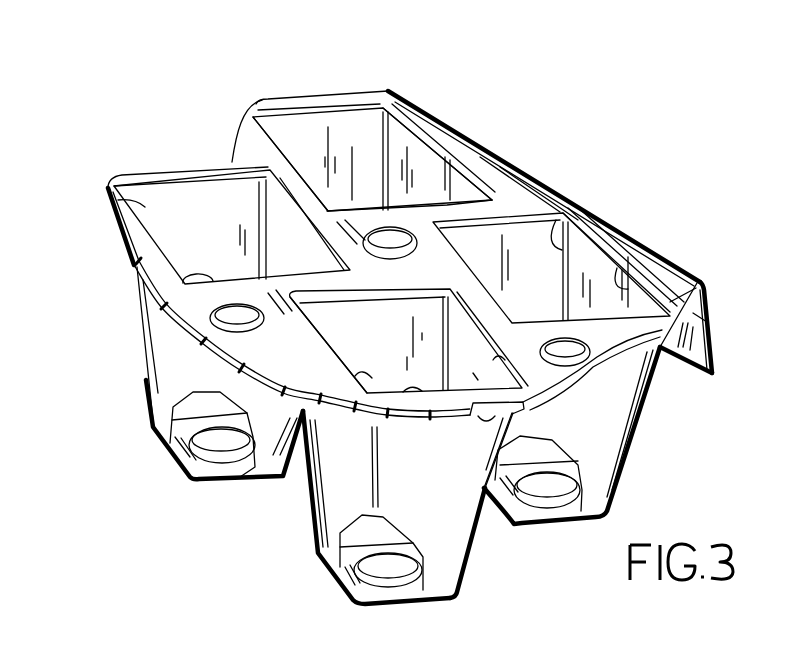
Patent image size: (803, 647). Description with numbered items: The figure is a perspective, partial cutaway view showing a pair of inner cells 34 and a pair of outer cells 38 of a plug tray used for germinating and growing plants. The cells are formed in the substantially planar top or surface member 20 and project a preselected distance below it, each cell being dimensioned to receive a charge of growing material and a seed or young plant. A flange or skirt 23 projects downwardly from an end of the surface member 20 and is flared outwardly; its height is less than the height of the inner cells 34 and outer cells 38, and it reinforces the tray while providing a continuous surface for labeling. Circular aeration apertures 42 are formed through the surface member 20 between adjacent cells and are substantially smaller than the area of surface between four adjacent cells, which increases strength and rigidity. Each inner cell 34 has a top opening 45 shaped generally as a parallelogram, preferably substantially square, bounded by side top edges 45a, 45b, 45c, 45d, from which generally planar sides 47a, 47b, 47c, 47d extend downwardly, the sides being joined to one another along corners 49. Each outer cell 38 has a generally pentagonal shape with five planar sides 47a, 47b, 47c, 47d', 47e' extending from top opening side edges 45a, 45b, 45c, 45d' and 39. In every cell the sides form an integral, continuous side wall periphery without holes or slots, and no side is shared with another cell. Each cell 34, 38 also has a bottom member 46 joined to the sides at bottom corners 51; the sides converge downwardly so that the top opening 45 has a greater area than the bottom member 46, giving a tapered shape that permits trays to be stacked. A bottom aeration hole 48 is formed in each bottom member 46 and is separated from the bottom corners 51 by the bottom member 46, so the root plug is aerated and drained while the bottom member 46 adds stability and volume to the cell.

The surface member 20 is at (233, 347).
The skirt 23 is at (713, 327).
The inner cell 34 is at (473, 373).
The outer cell 38 is at (423, 160).
The top opening side edge 39 is at (437, 150).
The aeration aperture 42 is at (455, 180).
The top opening 45 is at (187, 250).
The side top edge 45a is at (290, 107).
The side top edge 45b is at (287, 150).
The side top edge 45c is at (357, 210).
The side top edge 45d is at (364, 246).
The top opening side edge 45d' is at (574, 204).
The bottom member 46 is at (203, 470).
The planar side 47a is at (228, 232).
The planar side 47b is at (362, 485).
The planar side 47c is at (447, 512).
The planar side 47d is at (390, 250).
The planar side 47d' is at (724, 257).
The planar side 47e' is at (555, 152).
The bottom aeration hole 48 is at (203, 450).
The corner 49 is at (560, 215).
The bottom corner 51 is at (150, 430).